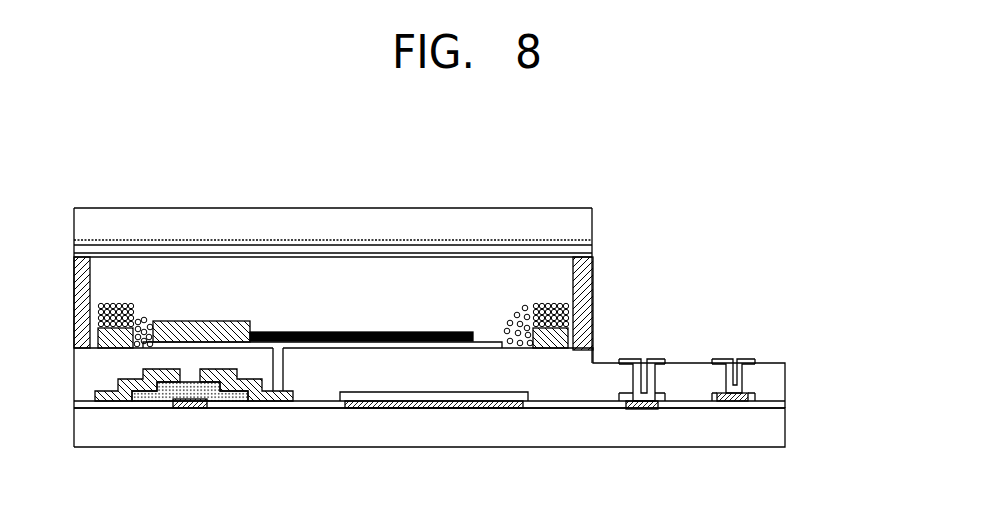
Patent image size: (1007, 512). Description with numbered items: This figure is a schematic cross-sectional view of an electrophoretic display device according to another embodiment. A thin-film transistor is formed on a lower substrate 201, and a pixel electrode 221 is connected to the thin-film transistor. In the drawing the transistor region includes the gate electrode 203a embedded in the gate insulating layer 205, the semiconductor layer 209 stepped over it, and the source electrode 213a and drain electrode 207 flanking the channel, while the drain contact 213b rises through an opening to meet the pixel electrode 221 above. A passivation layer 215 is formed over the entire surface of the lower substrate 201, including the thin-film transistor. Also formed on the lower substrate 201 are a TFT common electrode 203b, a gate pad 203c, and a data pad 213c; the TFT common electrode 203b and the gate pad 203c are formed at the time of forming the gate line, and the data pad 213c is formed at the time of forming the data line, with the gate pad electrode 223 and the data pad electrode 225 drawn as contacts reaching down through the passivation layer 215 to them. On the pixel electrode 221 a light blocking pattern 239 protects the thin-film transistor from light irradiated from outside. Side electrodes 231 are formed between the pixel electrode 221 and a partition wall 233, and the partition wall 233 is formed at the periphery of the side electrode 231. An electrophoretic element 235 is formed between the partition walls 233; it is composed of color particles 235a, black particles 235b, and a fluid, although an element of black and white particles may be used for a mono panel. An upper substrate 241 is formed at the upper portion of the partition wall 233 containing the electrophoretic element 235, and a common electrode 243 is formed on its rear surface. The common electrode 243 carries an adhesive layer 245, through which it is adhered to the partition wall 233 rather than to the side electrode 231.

The lower substrate 201 is at (783, 427).
The gate electrode 203a is at (189, 409).
The TFT common electrode 203b is at (403, 409).
The gate pad 203c is at (641, 410).
The gate insulating layer 205 is at (785, 405).
The drain electrode 207 is at (238, 402).
The semiconductor layer 209 is at (148, 402).
The source electrode 213a is at (107, 402).
The drain contact 213b is at (279, 402).
The data pad 213c is at (733, 402).
The passivation layer 215 is at (785, 376).
The pixel electrode 221 is at (332, 349).
The gate pad electrode 223 is at (652, 358).
The data pad electrode 225 is at (742, 358).
The side electrode 231 is at (127, 303).
The partition wall 233 is at (83, 272).
The electrophoretic element 235 is at (298, 266).
The color particles 235a is at (149, 322).
The black particles 235b is at (347, 330).
The light blocking pattern 239 is at (227, 320).
The upper substrate 241 is at (475, 222).
The common electrode 243 is at (435, 252).
The adhesive layer 245 is at (392, 258).